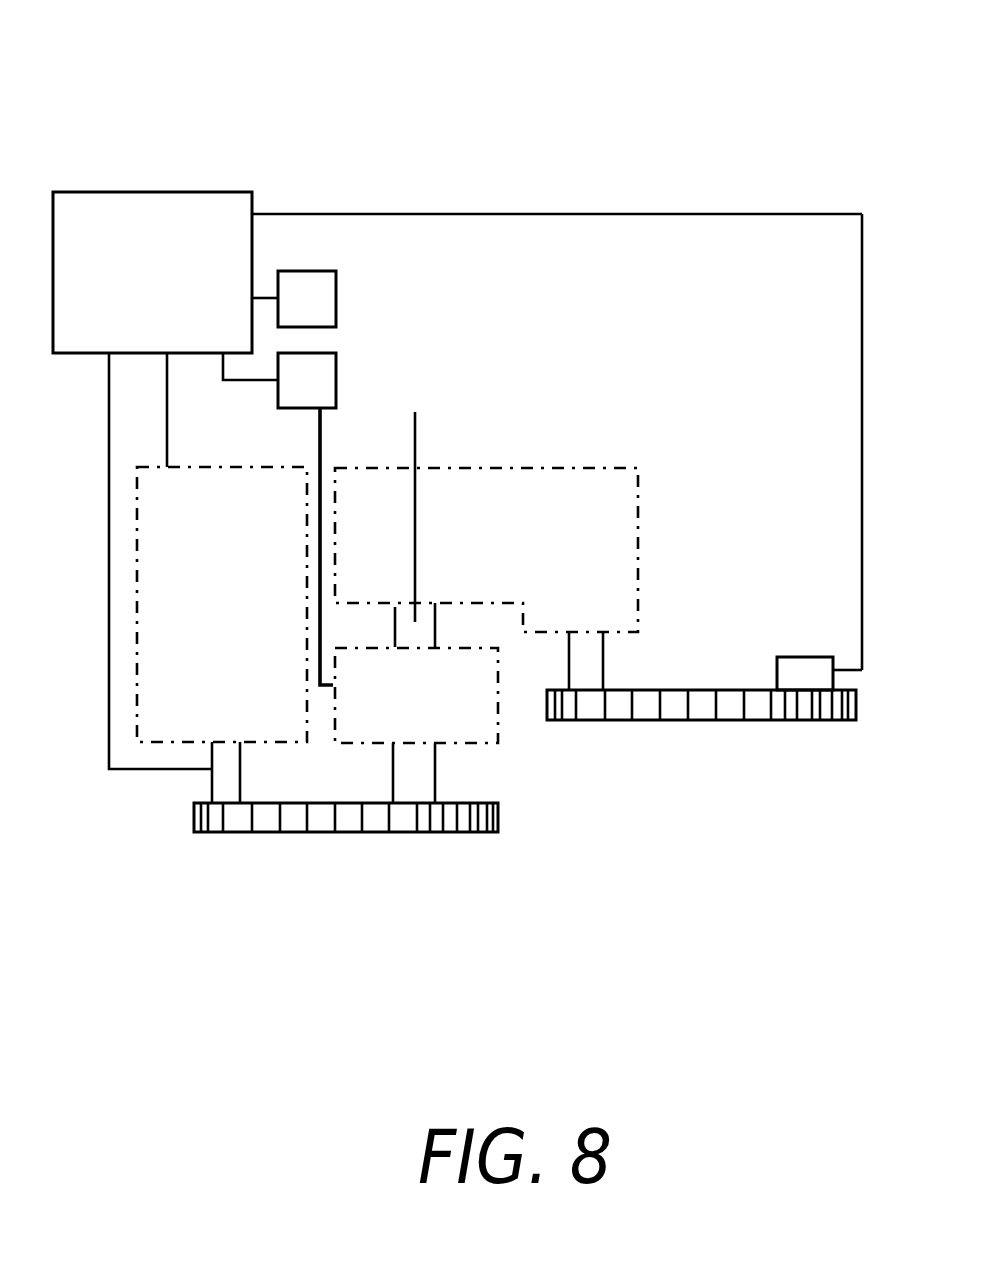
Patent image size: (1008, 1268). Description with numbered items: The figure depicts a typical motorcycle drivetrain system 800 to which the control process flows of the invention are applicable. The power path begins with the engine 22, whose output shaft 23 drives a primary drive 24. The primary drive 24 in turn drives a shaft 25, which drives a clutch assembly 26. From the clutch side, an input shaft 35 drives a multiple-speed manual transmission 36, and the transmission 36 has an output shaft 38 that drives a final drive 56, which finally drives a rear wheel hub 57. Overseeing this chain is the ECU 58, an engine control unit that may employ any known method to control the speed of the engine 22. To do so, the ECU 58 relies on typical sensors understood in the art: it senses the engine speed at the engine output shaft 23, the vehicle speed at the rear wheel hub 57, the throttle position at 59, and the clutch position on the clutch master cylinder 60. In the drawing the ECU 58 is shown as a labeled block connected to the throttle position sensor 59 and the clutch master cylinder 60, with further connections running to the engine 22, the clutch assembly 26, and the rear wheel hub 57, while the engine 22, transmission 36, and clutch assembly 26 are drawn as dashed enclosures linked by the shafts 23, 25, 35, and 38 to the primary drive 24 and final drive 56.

The motorcycle drivetrain system 800 is at (473, 33).
The ECU 58 is at (457, 457).
The throttle position 59 is at (294, 299).
The clutch master cylinder 60 is at (279, 519).
The engine 22 is at (222, 604).
The multiple-speed manual transmission 36 is at (486, 557).
The input shaft 35 is at (415, 497).
The clutch assembly 26 is at (416, 695).
The output shaft 23 is at (256, 772).
The shaft 25 is at (442, 773).
The primary drive 24 is at (346, 843).
The final drive 56 is at (701, 729).
The output shaft 38 is at (615, 661).
The rear wheel hub 57 is at (805, 651).